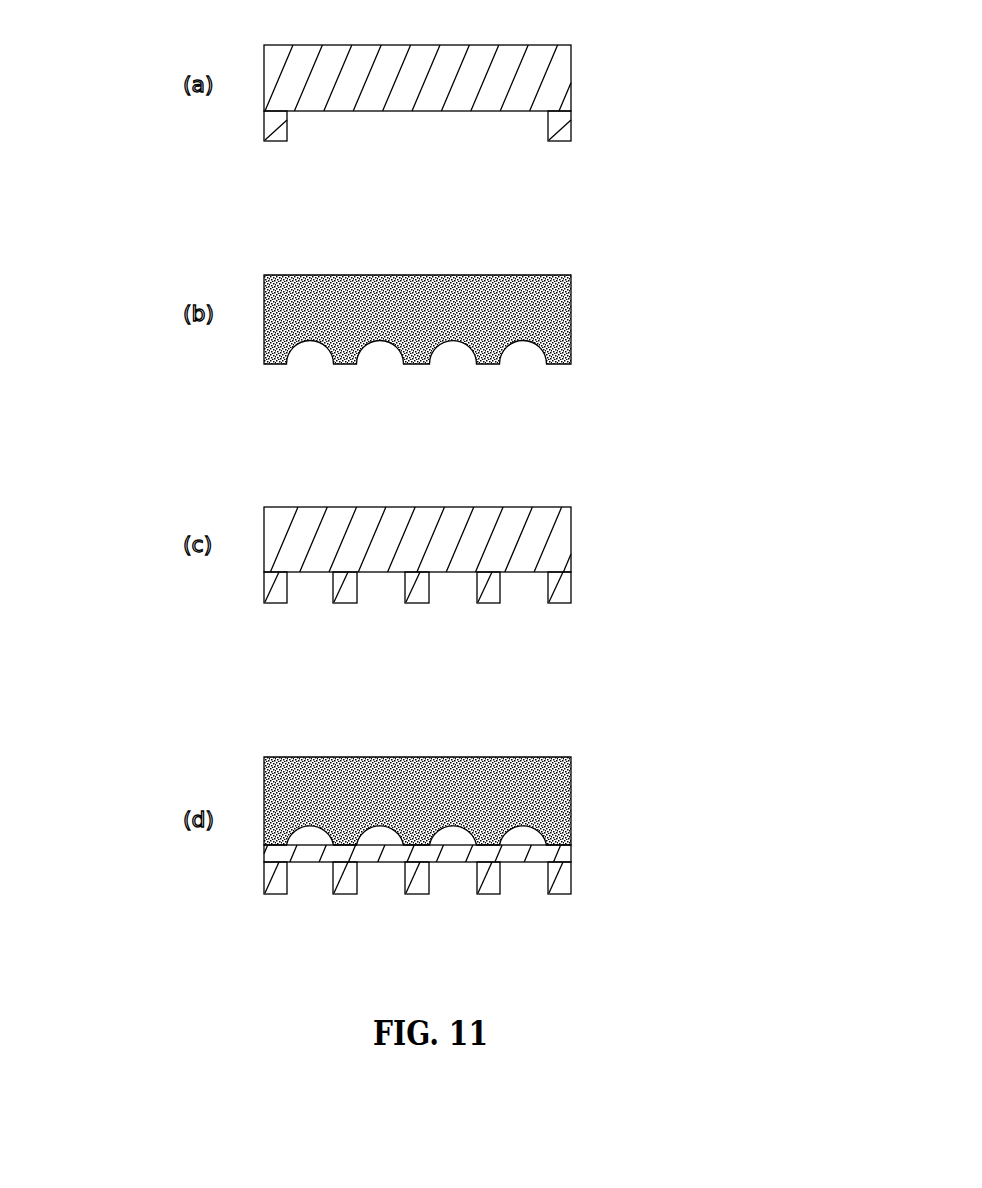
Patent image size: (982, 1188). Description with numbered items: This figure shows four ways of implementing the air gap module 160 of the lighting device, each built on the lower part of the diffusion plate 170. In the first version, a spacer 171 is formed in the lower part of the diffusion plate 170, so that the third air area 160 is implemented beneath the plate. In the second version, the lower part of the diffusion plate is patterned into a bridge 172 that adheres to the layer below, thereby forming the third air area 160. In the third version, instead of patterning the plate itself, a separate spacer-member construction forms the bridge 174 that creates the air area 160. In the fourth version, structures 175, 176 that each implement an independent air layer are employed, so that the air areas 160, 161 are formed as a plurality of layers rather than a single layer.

The diffusion plate 170 is at (563, 83).
The spacer 171 is at (563, 130).
The air gap module 160 is at (448, 125).
The bridge 172 is at (488, 366).
The bridge 174 is at (418, 598).
The structure 175 is at (563, 852).
The structure 176 is at (565, 880).
The third air area 161 is at (513, 875).